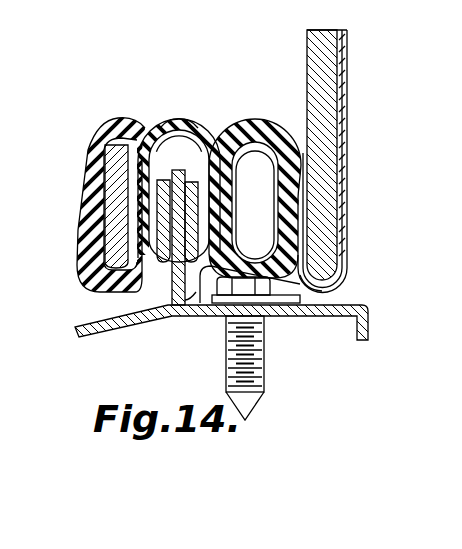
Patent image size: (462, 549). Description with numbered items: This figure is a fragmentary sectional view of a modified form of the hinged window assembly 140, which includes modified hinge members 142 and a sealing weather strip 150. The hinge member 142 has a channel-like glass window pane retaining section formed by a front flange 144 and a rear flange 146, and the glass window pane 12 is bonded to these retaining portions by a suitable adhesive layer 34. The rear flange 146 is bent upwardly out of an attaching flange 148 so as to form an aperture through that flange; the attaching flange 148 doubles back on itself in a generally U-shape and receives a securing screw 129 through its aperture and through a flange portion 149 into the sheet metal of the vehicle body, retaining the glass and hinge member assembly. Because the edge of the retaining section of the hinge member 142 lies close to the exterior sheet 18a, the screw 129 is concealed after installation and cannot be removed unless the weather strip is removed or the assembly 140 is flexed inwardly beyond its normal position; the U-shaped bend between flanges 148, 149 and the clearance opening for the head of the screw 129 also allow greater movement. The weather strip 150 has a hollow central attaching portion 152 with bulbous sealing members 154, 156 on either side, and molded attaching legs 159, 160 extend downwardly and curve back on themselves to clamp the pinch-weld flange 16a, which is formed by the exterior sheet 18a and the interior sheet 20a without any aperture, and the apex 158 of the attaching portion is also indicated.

The glass window pane 12 is at (306, 44).
The adhesive layer 34 is at (340, 62).
The hinged window assembly 140 is at (369, 161).
The front flange 144 is at (342, 148).
The rear flange 146 is at (310, 192).
The hinge member 142 is at (346, 268).
The sealing weather strip 150 is at (167, 176).
The central attaching portion 152 is at (203, 130).
The bulbous sealing member 154 is at (100, 128).
The bulbous sealing member 156 is at (265, 123).
The loop apex 158 is at (175, 130).
The attaching leg 159 is at (198, 200).
The attaching leg 160 is at (165, 185).
The pinch-weld flange 16a is at (167, 208).
The interior sheet 20a is at (95, 322).
The exterior sheet 18a is at (369, 326).
The attaching flange 148 is at (260, 309).
The flange portion 149 is at (281, 320).
The securing screw 129 is at (226, 358).